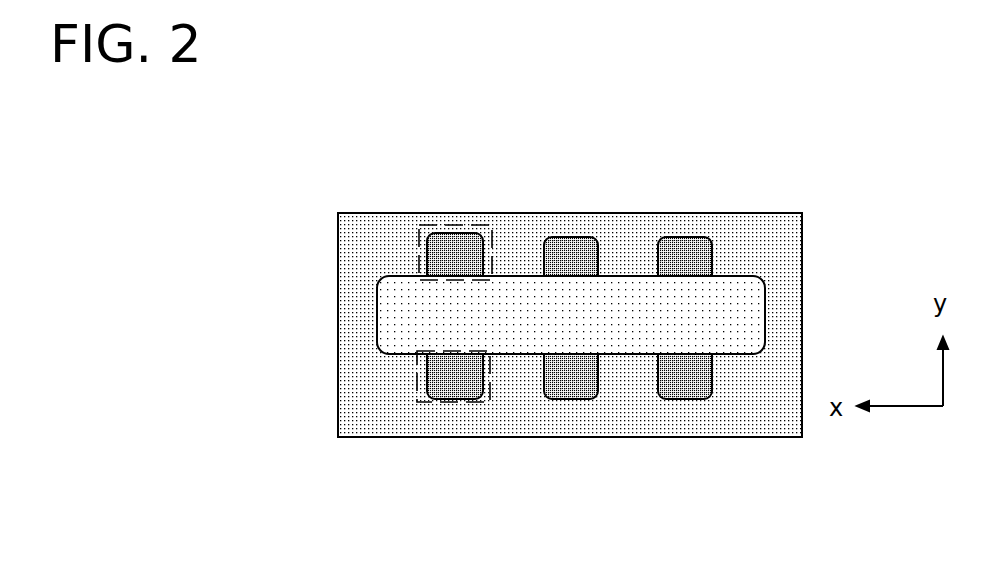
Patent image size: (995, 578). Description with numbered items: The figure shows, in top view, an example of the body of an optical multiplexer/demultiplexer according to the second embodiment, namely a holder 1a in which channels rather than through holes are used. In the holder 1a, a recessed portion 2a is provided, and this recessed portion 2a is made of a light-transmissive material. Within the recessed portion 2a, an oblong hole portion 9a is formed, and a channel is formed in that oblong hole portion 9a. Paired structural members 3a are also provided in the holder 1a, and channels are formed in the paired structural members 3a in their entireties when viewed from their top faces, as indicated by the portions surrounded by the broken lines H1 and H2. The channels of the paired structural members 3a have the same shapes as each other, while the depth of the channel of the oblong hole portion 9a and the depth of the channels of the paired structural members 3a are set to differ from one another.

The holder 1a is at (775, 230).
The recessed portion 2a is at (377, 302).
The paired structural members 3a is at (573, 237).
The oblong hole portion 9a is at (400, 343).
The portion surrounded by broken line H1 is at (458, 232).
The portion surrounded by broken line H2 is at (432, 400).